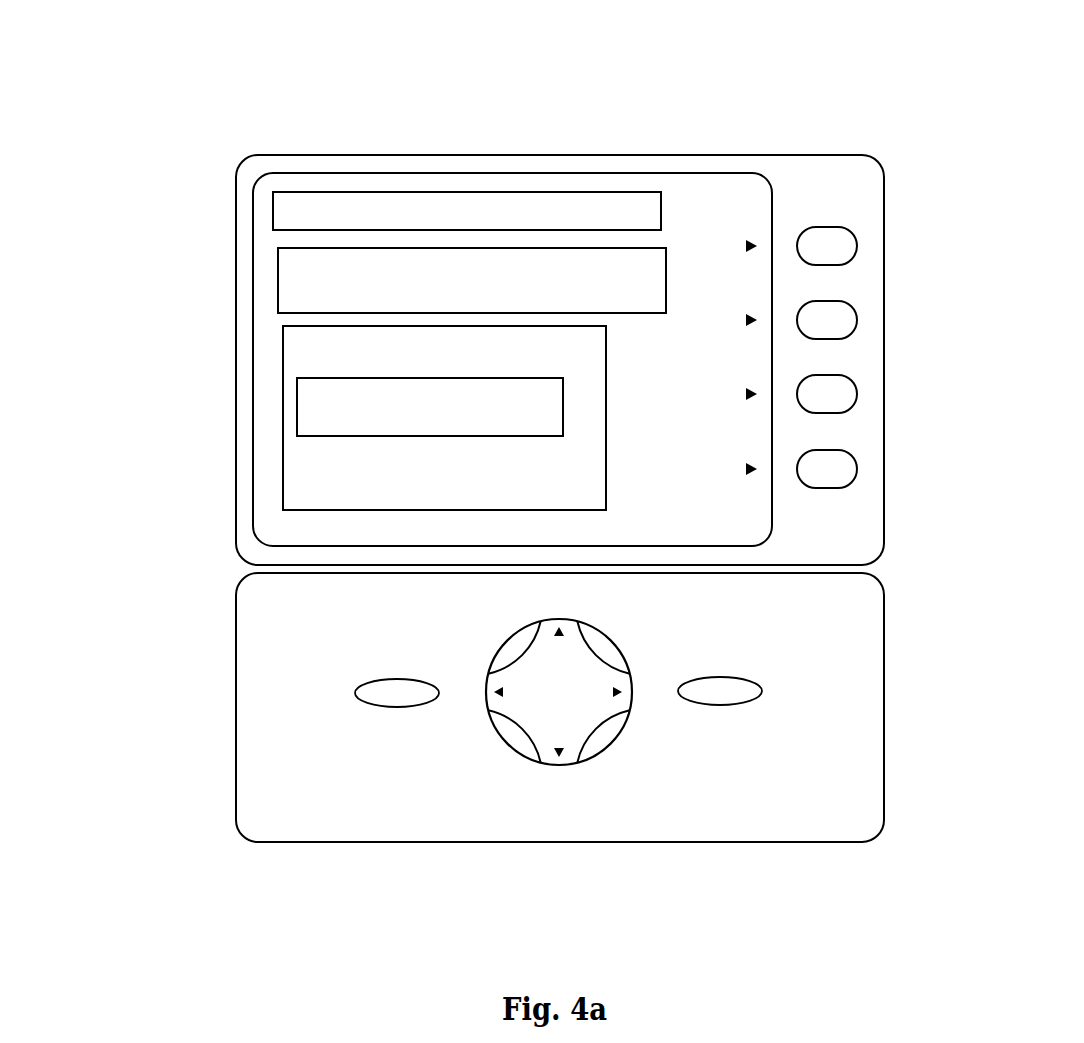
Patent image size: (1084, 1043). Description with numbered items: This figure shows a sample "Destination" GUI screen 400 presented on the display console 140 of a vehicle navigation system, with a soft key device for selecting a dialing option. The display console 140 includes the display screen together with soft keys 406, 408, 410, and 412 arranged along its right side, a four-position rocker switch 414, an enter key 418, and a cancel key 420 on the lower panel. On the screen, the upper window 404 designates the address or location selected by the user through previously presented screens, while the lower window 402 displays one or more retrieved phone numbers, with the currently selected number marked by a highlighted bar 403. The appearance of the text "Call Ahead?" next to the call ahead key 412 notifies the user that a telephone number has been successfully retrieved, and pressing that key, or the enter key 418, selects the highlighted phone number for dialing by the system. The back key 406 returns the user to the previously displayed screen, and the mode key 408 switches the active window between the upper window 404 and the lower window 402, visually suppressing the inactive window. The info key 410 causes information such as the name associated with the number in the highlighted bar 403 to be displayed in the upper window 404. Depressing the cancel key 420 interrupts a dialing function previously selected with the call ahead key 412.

The display console 140 is at (374, 58).
The Destination GUI screen 400 is at (715, 190).
The lower window 402 is at (282, 398).
The highlighted bar 403 is at (308, 435).
The upper window 404 is at (348, 251).
The back key 406 is at (845, 245).
The mode key 408 is at (845, 320).
The info key 410 is at (845, 394).
The call ahead key 412 is at (845, 469).
The four-position rocker switch 414 is at (500, 644).
The enter key 418 is at (760, 694).
The cancel key 420 is at (366, 700).